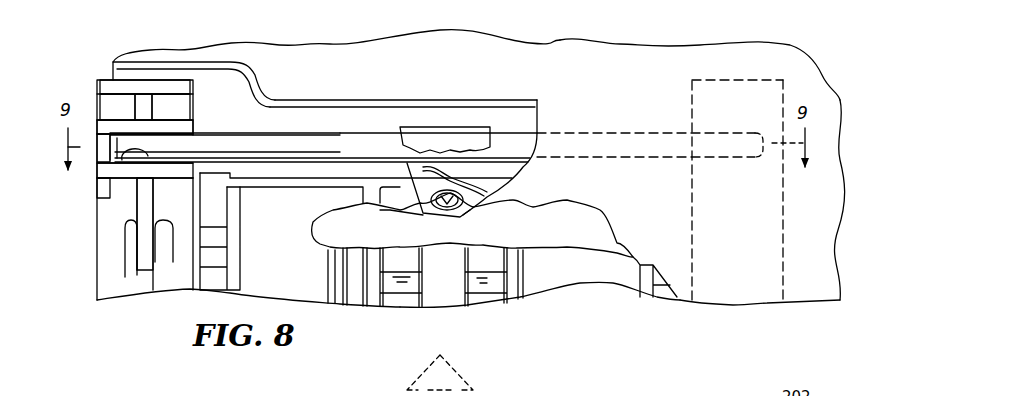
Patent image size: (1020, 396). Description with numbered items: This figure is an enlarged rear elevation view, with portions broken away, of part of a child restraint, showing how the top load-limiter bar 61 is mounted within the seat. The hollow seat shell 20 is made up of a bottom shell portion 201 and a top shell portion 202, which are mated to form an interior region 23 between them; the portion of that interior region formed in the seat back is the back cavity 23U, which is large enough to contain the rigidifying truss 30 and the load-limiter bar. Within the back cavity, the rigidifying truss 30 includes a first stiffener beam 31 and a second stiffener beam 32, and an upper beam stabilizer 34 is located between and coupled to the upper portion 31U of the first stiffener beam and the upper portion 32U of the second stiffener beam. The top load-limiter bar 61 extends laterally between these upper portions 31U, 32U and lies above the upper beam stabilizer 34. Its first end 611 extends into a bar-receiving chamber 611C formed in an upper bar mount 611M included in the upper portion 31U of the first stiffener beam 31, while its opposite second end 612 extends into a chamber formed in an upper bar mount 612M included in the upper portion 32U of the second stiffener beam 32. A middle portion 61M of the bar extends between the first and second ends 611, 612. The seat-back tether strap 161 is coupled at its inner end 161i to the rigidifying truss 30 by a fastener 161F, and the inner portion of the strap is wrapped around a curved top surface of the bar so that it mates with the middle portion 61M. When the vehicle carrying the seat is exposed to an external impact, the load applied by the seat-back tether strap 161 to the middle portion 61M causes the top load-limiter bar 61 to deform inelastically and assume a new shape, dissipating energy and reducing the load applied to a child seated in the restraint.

The hollow seat shell 20 is at (558, 36).
The top shell portion 202 is at (638, 40).
The interior region 23 is at (252, 117).
The back cavity 23U is at (217, 90).
The rigidifying truss 30 is at (95, 298).
The first stiffener beam 31 is at (95, 78).
The upper portion of first stiffener beam 31U is at (110, 182).
The second stiffener beam 32 is at (715, 80).
The upper portion of second stiffener beam 32U is at (722, 180).
The upper beam stabilizer 34 is at (463, 310).
The top load-limiter bar 61 is at (313, 130).
The middle portion 61M is at (380, 140).
The first end 611 is at (180, 148).
The upper bar mount 611M is at (140, 147).
The bar-receiving chamber 611C is at (193, 257).
The second end 612 is at (753, 160).
The upper bar mount 612M is at (757, 97).
The seat-back tether strap 161 is at (467, 123).
The inner end 161i is at (425, 127).
The fastener 161F is at (465, 202).
The bottom shell portion 201 is at (712, 307).